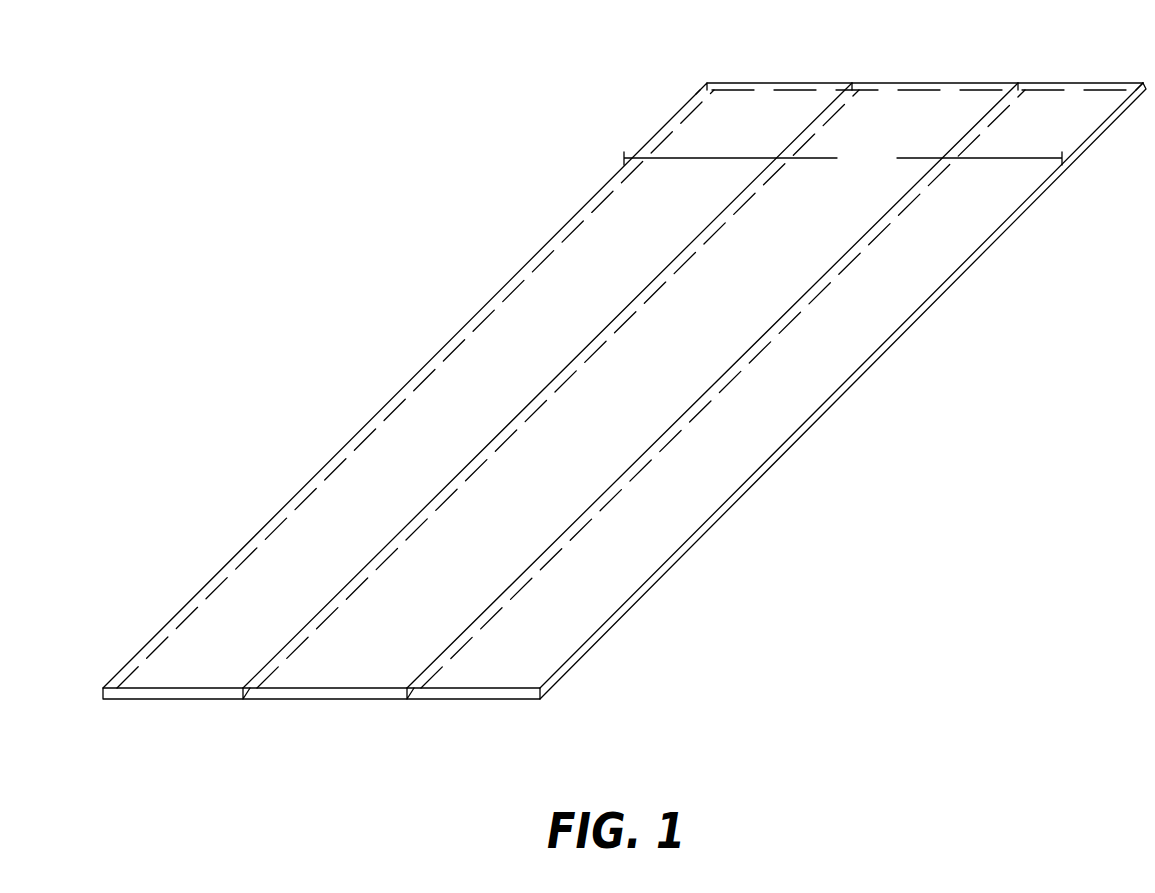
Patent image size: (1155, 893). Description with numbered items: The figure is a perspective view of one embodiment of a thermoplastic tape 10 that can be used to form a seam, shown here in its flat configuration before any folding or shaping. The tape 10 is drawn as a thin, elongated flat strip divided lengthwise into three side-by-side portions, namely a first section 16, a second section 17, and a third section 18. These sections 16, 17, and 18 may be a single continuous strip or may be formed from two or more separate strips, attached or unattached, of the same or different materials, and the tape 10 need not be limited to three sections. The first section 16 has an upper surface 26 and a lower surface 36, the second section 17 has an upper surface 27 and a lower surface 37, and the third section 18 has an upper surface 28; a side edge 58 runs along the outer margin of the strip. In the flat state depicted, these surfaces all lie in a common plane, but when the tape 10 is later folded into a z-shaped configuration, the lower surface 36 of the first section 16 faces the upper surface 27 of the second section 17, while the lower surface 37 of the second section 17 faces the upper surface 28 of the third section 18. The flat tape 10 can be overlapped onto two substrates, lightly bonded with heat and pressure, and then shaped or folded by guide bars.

The thermoplastic tape 10 is at (520, 132).
The first section 16 is at (518, 330).
The second section 17 is at (327, 656).
The third section 18 is at (713, 472).
The upper surface of the first section 26 is at (265, 525).
The upper surface of the second section 27 is at (353, 690).
The upper surface of the third section 28 is at (1013, 215).
The lower surface of the first section 36 is at (148, 700).
The lower surface of the second section 37 is at (937, 92).
The side edge of the tape 58 is at (612, 628).